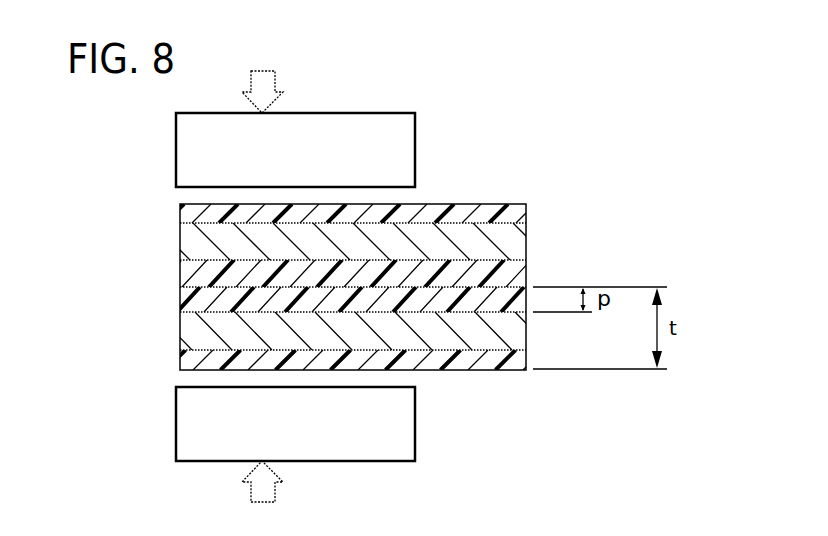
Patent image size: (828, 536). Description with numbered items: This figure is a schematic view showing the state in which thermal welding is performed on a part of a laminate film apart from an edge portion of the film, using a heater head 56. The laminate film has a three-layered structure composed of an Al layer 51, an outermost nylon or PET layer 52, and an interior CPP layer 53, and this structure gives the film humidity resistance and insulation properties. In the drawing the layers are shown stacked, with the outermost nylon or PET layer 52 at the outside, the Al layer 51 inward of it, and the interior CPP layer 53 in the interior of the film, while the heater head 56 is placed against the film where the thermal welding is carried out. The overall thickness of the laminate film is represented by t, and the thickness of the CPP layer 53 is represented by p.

The Al layer 51 is at (188, 247).
The outermost nylon or PET layer 52 is at (180, 218).
The interior CPP layer 53 is at (180, 276).
The heater head 56 is at (190, 151).